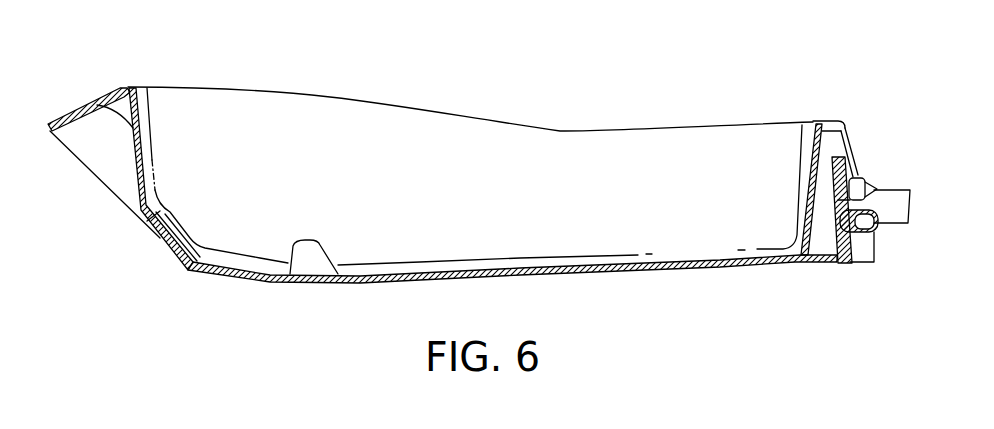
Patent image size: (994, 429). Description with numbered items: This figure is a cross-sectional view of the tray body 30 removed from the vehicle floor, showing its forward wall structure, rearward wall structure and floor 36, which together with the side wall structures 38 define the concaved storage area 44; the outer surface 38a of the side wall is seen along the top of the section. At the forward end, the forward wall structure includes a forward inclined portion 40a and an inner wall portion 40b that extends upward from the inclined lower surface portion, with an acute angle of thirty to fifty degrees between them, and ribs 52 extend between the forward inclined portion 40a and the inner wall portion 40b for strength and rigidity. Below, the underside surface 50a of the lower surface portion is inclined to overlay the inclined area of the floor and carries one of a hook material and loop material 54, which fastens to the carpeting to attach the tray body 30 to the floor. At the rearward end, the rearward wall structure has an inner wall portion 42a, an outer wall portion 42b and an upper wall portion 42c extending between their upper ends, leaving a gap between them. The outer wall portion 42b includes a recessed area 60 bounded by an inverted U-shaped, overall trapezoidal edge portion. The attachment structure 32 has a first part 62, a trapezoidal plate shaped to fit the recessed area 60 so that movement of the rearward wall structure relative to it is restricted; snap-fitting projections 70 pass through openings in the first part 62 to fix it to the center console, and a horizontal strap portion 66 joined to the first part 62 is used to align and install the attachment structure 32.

The tray body 30 is at (487, 178).
The attachment structure 32 is at (908, 190).
The floor 36 is at (490, 275).
The side wall structure 38 is at (542, 190).
The outer surface 38a is at (420, 110).
The forward inclined portion 40a is at (73, 112).
The inner wall portion 40b is at (145, 140).
The inner wall portion 42a is at (808, 188).
The outer wall portion 42b is at (858, 149).
The upper wall portion 42c is at (818, 121).
The concaved storage area 44 is at (345, 158).
The underside surface 50a is at (152, 232).
The ribs 52 is at (125, 108).
The hook material and loop material 54 is at (170, 252).
The recessed area 60 is at (830, 168).
The first part 62 is at (835, 194).
The horizontal strap portion 66 is at (893, 218).
The snap-fitting projection 70 is at (878, 198).